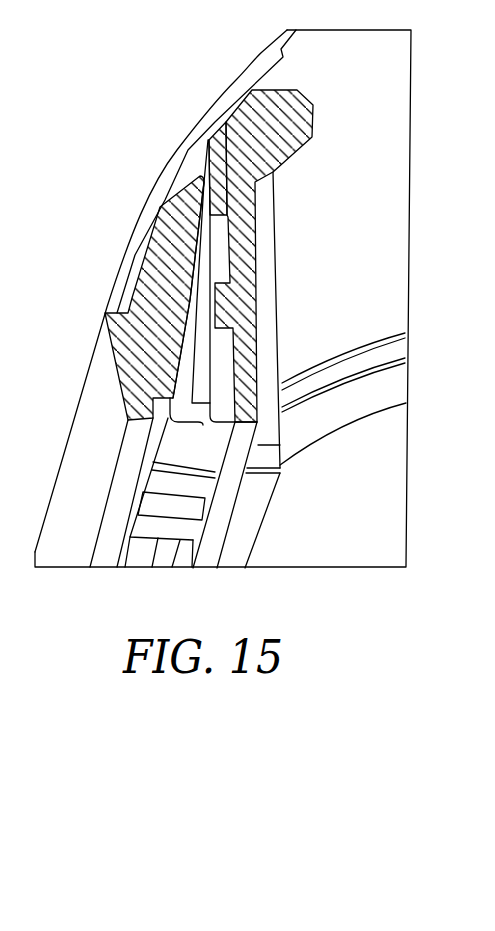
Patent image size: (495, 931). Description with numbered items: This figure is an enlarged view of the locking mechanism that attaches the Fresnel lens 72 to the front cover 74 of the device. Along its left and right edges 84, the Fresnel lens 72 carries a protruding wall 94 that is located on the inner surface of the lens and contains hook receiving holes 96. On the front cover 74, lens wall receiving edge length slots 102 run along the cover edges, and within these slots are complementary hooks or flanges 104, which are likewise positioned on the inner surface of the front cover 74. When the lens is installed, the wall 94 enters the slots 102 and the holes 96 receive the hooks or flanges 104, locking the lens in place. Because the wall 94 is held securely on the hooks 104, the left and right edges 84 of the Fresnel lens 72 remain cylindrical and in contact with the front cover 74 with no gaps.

The Fresnel lens 72 is at (238, 76).
The front cover 74 is at (75, 442).
The left and right edges 84 is at (112, 311).
The protruding wall 94 is at (190, 310).
The hook receiving holes 96 is at (210, 243).
The lens wall receiving edge length slots 102 is at (203, 425).
The hooks or flanges 104 is at (243, 260).